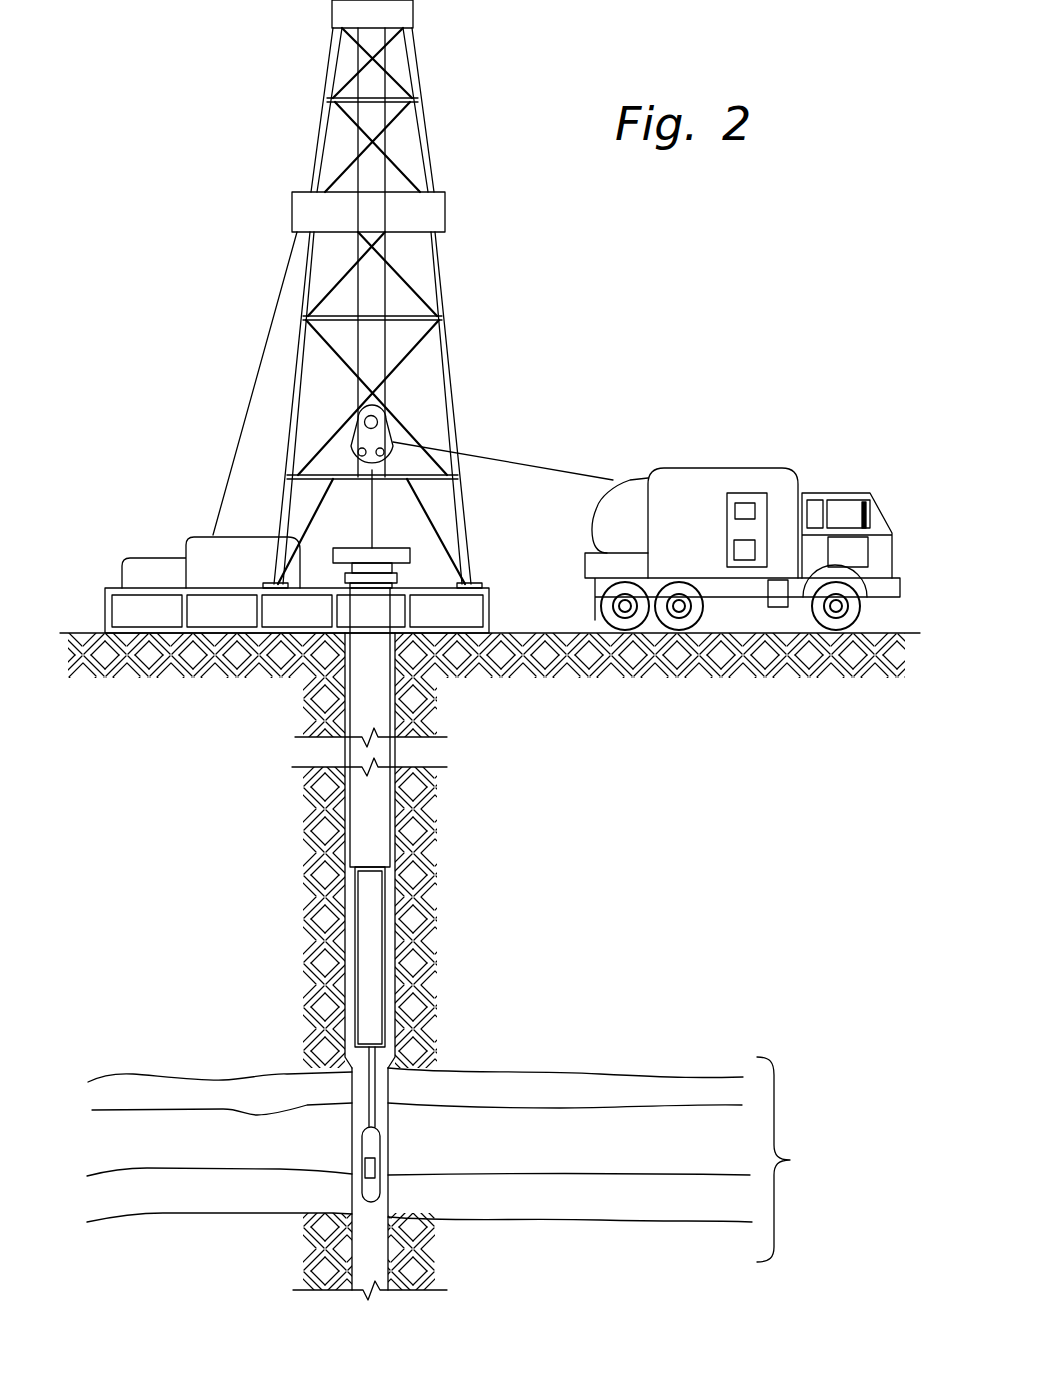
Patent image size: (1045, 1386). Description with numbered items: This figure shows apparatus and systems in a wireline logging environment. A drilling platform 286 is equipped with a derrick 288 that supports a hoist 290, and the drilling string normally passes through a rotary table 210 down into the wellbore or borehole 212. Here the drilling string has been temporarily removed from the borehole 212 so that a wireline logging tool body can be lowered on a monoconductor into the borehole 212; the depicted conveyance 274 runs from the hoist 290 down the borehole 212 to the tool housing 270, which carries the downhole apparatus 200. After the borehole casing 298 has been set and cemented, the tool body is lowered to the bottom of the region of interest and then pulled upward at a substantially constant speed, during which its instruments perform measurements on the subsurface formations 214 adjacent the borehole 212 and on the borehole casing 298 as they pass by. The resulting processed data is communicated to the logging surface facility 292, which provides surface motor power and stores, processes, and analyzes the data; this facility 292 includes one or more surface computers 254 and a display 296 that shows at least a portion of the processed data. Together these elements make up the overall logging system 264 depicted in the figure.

The drilling system 264 is at (600, 296).
The derrick 288 is at (473, 572).
The hoist 290 is at (384, 428).
The rotary table 210 is at (410, 555).
The drilling platform 286 is at (490, 606).
The wireline / drill pipe conveyance 274 is at (571, 467).
The logging surface facility 292 is at (742, 522).
The surface computer 254 is at (727, 531).
The display 296 is at (735, 507).
The borehole 212 is at (397, 1003).
The borehole casing 298 is at (352, 1095).
The subsurface formations 214 is at (464, 1159).
The tool housing 270 is at (374, 1141).
The sensor tool 200 is at (375, 1168).